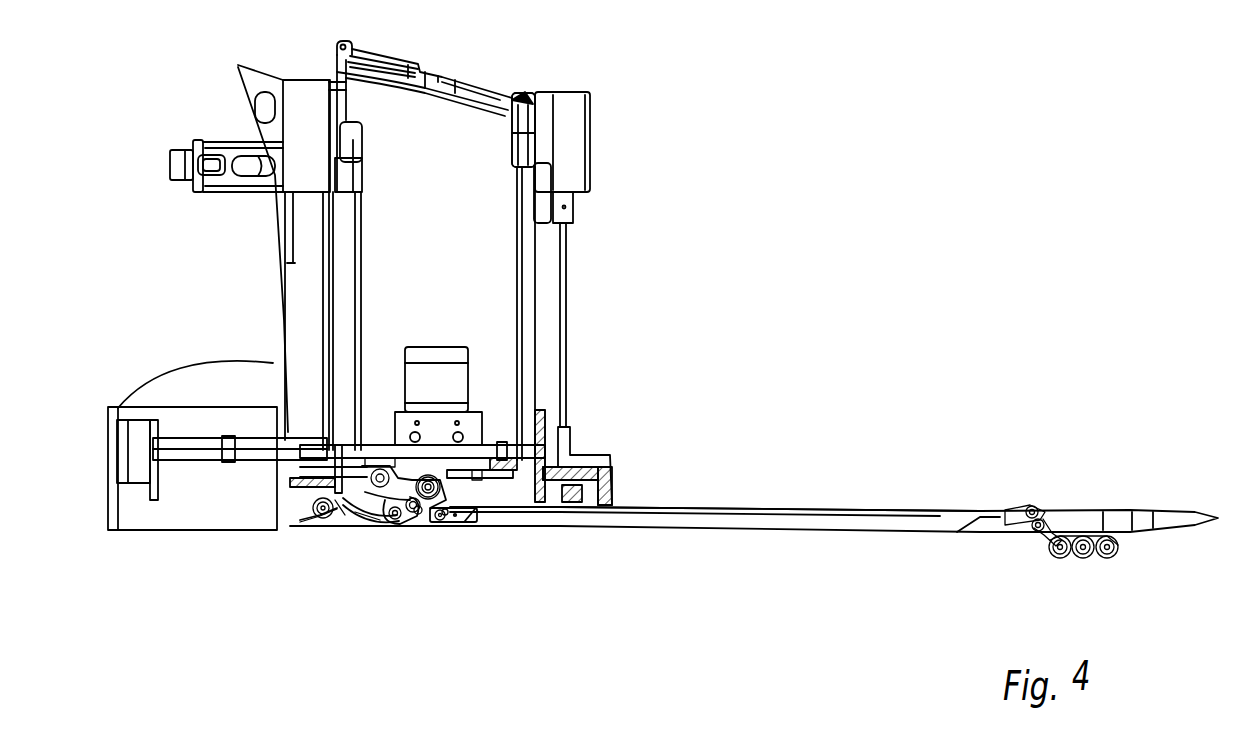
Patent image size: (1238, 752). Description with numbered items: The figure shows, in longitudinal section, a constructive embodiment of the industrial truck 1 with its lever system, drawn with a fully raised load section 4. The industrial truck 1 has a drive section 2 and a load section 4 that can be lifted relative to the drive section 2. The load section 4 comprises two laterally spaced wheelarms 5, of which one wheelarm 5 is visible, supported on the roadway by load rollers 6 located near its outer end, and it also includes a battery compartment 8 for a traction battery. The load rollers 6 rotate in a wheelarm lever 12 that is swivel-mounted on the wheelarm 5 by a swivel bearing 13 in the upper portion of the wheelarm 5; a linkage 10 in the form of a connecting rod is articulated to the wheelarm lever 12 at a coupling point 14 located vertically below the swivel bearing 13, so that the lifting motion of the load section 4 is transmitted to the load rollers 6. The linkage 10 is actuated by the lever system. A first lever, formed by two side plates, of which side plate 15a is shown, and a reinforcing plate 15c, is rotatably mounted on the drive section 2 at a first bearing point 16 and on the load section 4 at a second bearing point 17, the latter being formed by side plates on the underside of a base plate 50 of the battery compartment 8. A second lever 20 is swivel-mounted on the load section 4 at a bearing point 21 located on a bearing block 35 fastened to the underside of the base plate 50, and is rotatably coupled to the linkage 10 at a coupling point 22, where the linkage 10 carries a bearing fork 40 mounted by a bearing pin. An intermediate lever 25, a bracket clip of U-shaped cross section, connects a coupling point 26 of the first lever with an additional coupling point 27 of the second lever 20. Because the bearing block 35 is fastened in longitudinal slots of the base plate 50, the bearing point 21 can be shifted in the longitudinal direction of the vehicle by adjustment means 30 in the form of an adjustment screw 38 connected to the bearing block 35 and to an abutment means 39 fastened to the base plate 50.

The industrial truck 1 is at (678, 105).
The drive section 2 is at (170, 437).
The load section 4 is at (525, 94).
The wheelarm 5 is at (918, 486).
The load rollers 6 is at (1108, 560).
The battery compartment 8 is at (457, 220).
The linkage 10 is at (836, 522).
The wheelarm lever 12 is at (1058, 530).
The swivel bearing 13 is at (1031, 506).
The coupling point 14 is at (1038, 531).
The side plate 15a is at (327, 532).
The reinforcing plate 15c is at (343, 527).
The first bearing point 16 is at (320, 521).
The second bearing point 17 is at (395, 524).
The second lever 20 is at (427, 524).
The bearing point 21 is at (440, 485).
The coupling point 22 is at (442, 524).
The intermediate lever 25 is at (367, 530).
The coupling point 26 is at (415, 524).
The coupling point 27 is at (377, 473).
The adjustment means 30 is at (463, 482).
The bearing block 35 is at (432, 478).
The adjustment screw 38 is at (484, 480).
The abutment means 39 is at (540, 435).
The bearing fork 40 is at (458, 524).
The base plate 50 is at (378, 463).